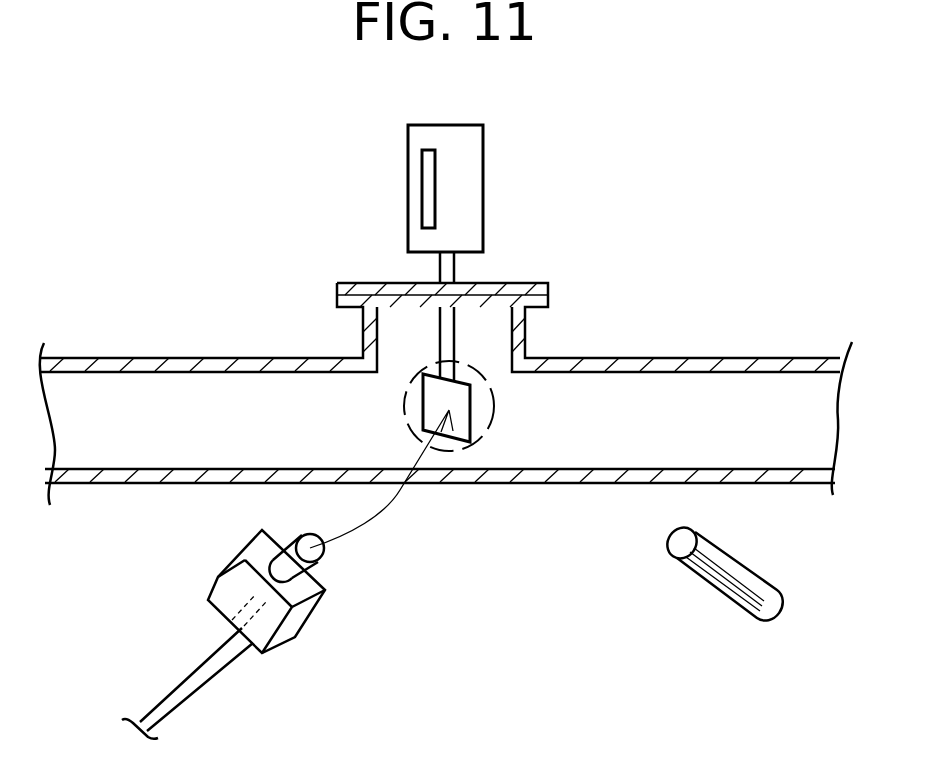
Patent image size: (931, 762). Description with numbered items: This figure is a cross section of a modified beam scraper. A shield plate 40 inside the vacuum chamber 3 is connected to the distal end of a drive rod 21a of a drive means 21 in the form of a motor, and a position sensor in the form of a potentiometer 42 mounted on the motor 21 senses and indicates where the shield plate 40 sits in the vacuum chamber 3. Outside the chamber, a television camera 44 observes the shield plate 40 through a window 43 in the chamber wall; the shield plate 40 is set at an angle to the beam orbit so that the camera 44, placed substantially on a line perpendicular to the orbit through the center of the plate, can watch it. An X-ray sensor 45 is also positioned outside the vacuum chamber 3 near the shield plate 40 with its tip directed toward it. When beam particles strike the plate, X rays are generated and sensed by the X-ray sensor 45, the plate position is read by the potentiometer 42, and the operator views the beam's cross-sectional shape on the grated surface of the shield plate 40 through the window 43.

The vacuum chamber 3 is at (700, 358).
The drive means 21 is at (484, 150).
The drive rod 21a is at (455, 266).
The shield plate 40 is at (462, 402).
The potentiometer 42 is at (425, 178).
The window 43 is at (487, 428).
The television camera 44 is at (254, 630).
The X-ray sensor 45 is at (728, 568).